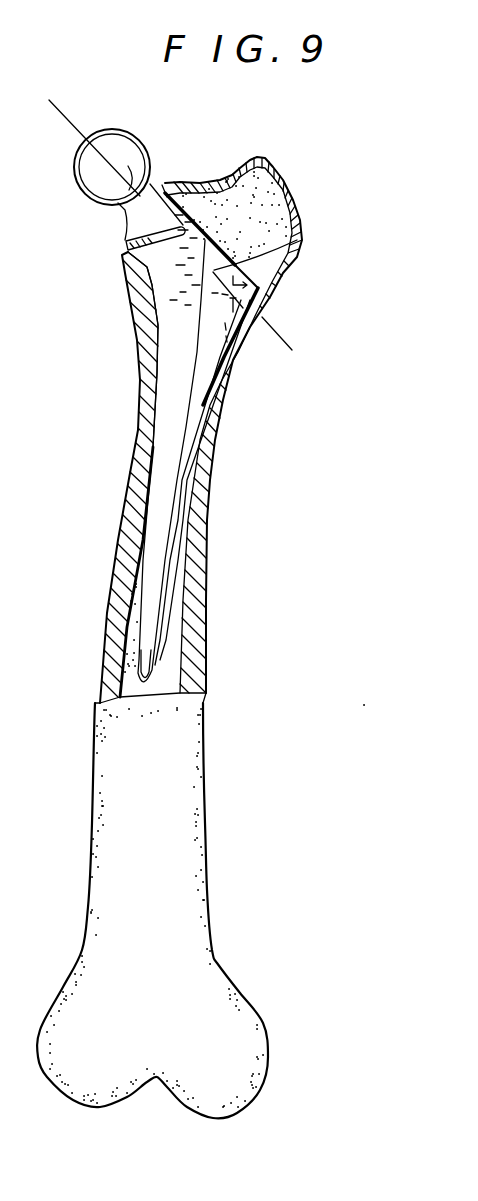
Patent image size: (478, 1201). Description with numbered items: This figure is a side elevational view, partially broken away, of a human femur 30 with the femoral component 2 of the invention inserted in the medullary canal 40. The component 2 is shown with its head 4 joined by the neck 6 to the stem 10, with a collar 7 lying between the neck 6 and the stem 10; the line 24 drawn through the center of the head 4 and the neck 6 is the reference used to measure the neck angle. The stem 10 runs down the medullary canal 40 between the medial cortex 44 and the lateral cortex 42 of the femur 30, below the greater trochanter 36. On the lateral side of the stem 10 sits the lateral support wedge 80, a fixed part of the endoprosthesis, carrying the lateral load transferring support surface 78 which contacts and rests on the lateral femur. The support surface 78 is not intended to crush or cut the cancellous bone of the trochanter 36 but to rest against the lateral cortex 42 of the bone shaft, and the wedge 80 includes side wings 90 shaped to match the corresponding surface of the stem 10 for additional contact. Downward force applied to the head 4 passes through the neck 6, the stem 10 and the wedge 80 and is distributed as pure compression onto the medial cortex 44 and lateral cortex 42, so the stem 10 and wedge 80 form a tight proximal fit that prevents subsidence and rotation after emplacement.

The femoral component 2 is at (113, 378).
The head 4 is at (117, 140).
The neck 6 is at (158, 188).
The collar 7 is at (125, 244).
The stem 10 is at (166, 478).
The line through the center of the head and the neck 24 is at (73, 170).
The femur 30 is at (217, 673).
The greater trochanter 36 is at (297, 190).
The medullary canal 40 is at (210, 403).
The lateral cortex 42 is at (259, 322).
The medial cortex 44 is at (140, 375).
The lateral load transferring support surface 78 is at (273, 295).
The lateral support wedge 80 is at (286, 336).
The side wings 90 is at (297, 240).